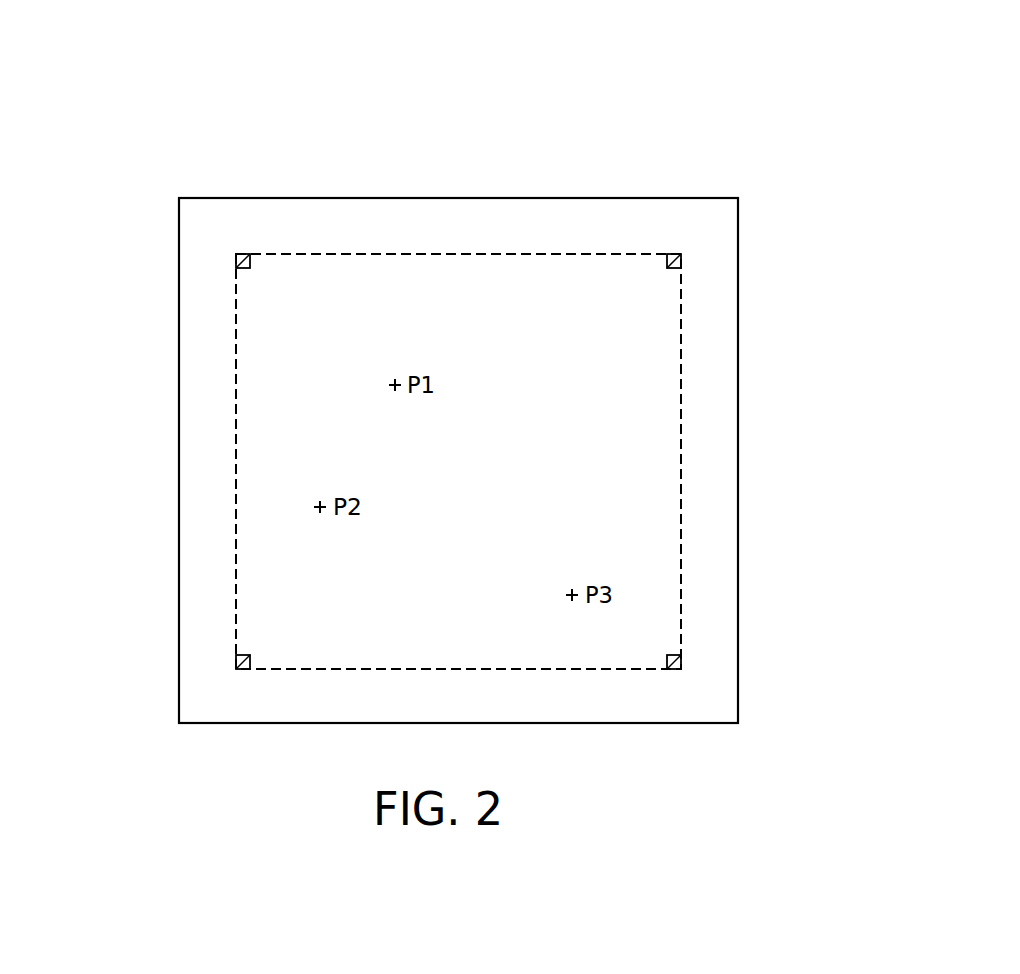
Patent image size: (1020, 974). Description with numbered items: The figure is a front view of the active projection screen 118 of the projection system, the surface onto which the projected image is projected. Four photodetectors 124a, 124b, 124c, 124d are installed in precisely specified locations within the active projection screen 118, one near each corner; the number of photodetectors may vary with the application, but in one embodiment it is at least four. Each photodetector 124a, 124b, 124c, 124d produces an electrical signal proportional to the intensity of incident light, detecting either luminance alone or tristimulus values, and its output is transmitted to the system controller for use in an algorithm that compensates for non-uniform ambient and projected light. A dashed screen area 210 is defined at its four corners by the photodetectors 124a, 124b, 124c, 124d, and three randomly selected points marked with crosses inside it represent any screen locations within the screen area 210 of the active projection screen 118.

The active projection screen 118 is at (324, 88).
The screen area 210 is at (683, 408).
The photodetector 124a is at (234, 257).
The photodetector 124b is at (682, 258).
The photodetector 124c is at (236, 667).
The photodetector 124d is at (683, 664).